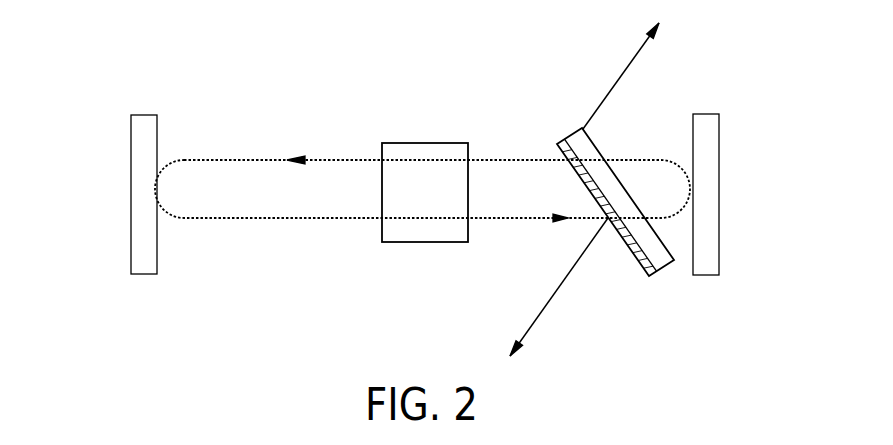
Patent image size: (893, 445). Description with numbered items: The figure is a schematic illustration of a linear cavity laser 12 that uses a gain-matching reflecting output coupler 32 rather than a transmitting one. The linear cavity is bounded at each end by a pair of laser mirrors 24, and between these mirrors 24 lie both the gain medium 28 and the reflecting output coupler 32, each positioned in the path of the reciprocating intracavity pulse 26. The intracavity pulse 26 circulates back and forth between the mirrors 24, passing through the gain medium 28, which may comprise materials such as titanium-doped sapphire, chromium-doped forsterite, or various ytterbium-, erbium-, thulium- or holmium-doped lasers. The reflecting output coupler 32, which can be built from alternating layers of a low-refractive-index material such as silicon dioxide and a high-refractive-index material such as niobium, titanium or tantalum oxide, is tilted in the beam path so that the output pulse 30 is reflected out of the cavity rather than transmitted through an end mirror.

The linear cavity laser 12 is at (150, 77).
The laser mirror 24 is at (145, 238).
The intracavity pulse 26 is at (212, 160).
The gain medium 28 is at (420, 173).
The output pulse 30 is at (615, 85).
The reflecting output coupler 32 is at (642, 238).